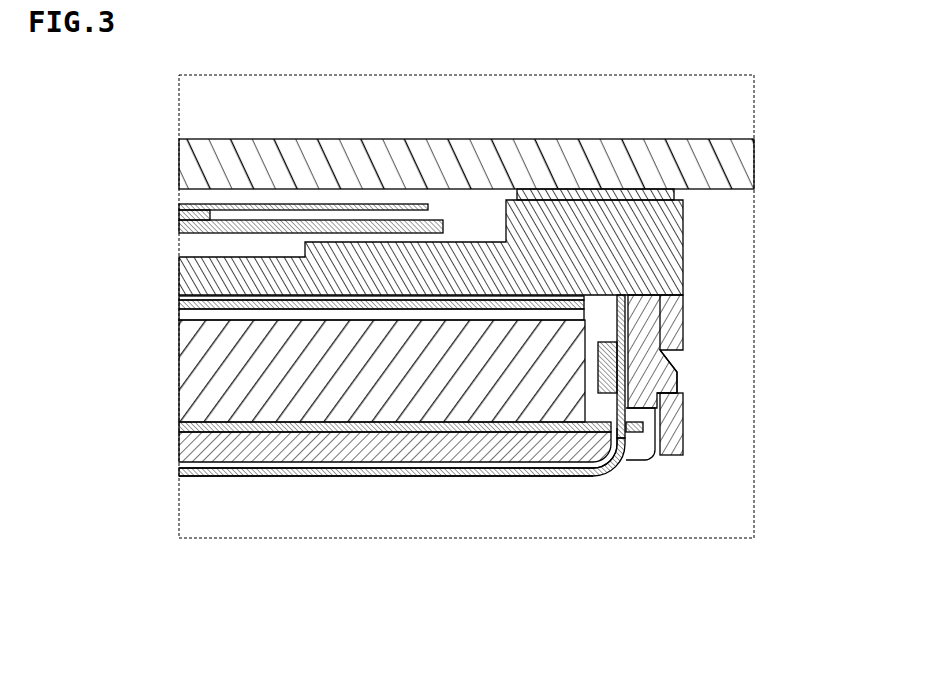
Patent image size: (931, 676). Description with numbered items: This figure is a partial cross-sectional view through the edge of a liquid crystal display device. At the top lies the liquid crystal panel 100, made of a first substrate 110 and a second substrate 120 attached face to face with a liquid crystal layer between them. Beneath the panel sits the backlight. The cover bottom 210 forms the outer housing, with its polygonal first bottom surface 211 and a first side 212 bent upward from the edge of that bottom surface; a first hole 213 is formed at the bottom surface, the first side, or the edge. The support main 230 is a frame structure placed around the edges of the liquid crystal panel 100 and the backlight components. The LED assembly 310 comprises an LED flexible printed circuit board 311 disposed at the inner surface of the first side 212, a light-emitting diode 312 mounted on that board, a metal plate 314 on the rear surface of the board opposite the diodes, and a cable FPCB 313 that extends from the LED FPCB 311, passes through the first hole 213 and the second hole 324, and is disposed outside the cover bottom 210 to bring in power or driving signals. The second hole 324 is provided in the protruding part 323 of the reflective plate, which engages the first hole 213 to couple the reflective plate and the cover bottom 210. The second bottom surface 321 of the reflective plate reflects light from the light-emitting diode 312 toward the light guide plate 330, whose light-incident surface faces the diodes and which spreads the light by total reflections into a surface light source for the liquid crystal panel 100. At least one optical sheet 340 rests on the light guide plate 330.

The liquid crystal panel 100 is at (244, 218).
The first substrate 110 is at (178, 225).
The second substrate 120 is at (178, 214).
The cover bottom 210 is at (398, 466).
The first bottom surface 211 is at (617, 329).
The first side 212 is at (585, 338).
The first hole 213 is at (647, 470).
The support main 230 is at (683, 320).
The LED assembly 310 is at (429, 509).
The LED flexible printed circuit board 311 is at (583, 473).
The light-emitting diode 312 is at (585, 398).
The cable FPCB 313 is at (585, 370).
The metal plate 314 is at (603, 473).
The second bottom surface 321 is at (238, 472).
The protruding part 323 is at (683, 430).
The second hole 324 is at (683, 403).
The light guide plate 330 is at (226, 378).
The optical sheet 340 is at (683, 287).